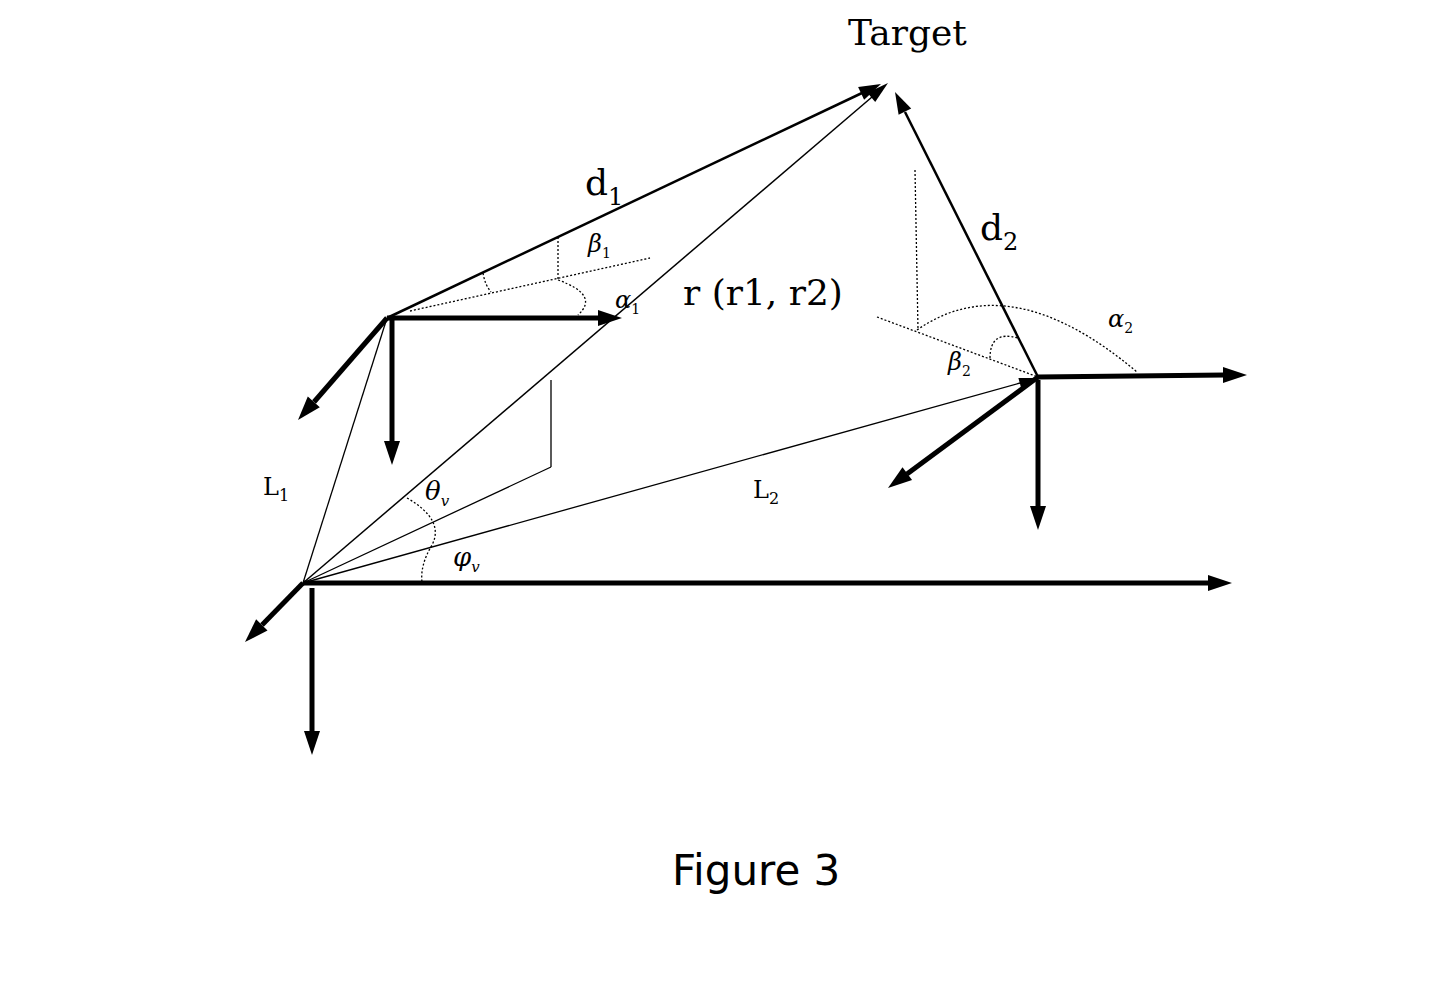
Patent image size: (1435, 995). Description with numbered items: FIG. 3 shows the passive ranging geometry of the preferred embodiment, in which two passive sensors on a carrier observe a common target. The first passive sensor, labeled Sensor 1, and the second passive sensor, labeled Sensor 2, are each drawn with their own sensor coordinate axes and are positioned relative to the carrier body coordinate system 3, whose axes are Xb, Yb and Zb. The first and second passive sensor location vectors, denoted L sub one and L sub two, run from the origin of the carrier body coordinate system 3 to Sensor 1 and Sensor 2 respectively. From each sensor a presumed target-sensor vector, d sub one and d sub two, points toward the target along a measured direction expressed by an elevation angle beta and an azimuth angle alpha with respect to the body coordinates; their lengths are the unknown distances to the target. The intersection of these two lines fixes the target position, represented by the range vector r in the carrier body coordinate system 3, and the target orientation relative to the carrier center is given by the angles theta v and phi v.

The first passive sensor 1 is at (387, 317).
The second passive sensor 2 is at (1040, 380).
The carrier body coordinate system 3 is at (322, 592).